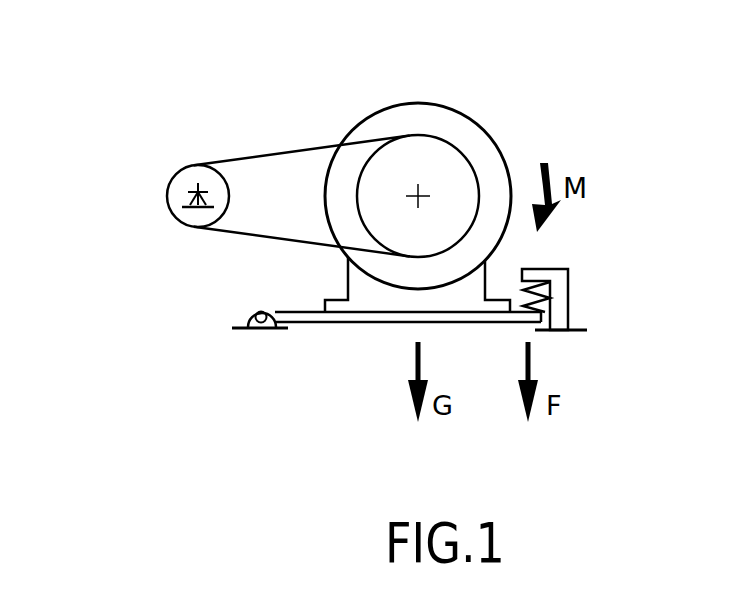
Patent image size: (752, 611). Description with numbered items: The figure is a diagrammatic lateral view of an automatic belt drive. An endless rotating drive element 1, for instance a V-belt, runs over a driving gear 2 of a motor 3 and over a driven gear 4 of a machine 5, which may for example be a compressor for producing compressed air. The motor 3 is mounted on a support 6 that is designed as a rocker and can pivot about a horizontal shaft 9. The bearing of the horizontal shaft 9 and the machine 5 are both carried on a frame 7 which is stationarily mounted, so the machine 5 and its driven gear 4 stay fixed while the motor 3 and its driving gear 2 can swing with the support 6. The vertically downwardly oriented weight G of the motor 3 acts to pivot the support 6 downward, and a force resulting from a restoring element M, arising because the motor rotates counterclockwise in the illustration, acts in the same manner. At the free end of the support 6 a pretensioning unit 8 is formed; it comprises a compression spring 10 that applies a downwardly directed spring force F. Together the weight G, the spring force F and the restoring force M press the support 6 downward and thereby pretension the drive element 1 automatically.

The drive element 1 is at (285, 152).
The driving gear 2 is at (433, 168).
The motor 3 is at (480, 163).
The driven gear 4 is at (195, 175).
The machine 5 is at (147, 217).
The support 6 is at (313, 318).
The frame 7 is at (266, 330).
The pretensioning unit 8 is at (603, 324).
The horizontal shaft 9 is at (257, 309).
The compression spring 10 is at (550, 300).